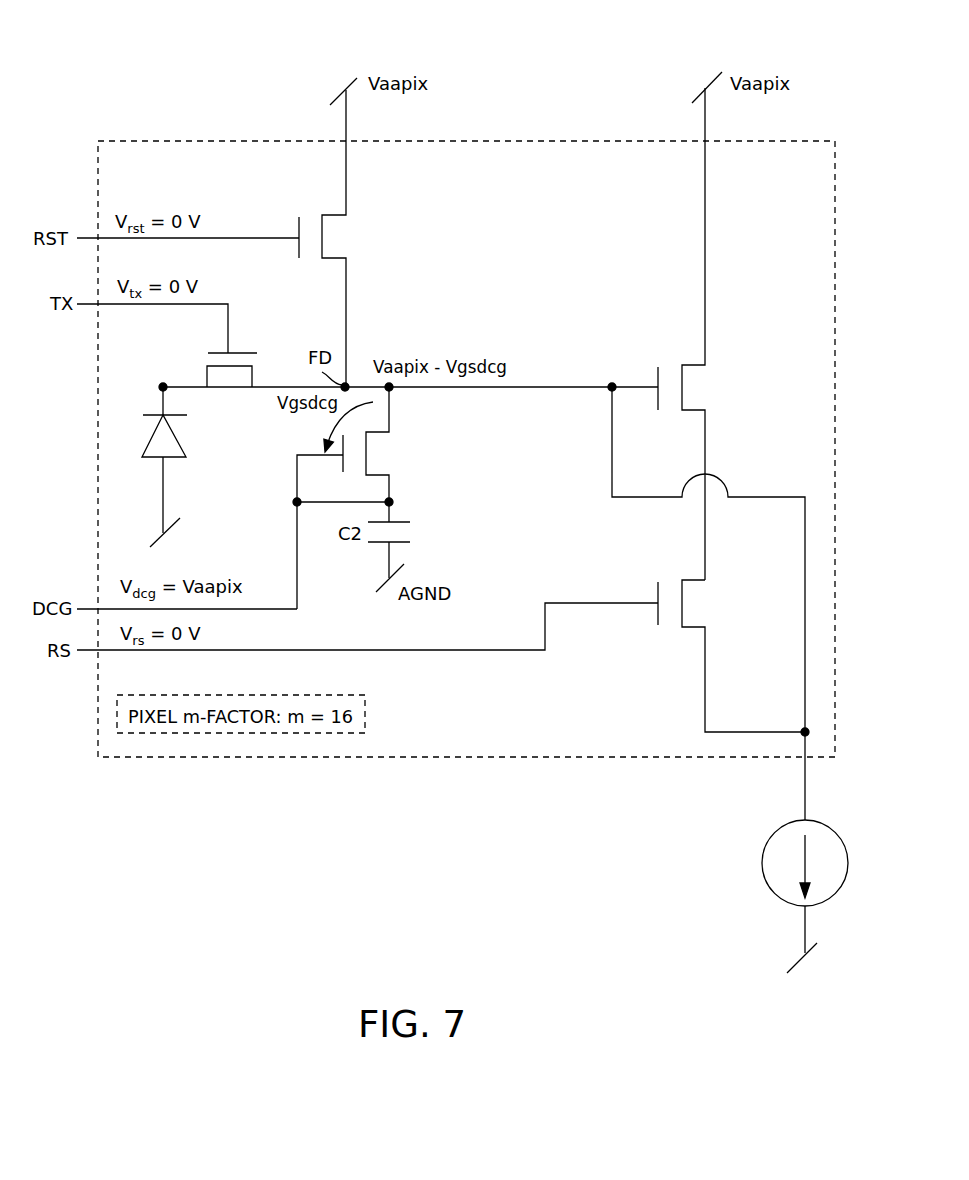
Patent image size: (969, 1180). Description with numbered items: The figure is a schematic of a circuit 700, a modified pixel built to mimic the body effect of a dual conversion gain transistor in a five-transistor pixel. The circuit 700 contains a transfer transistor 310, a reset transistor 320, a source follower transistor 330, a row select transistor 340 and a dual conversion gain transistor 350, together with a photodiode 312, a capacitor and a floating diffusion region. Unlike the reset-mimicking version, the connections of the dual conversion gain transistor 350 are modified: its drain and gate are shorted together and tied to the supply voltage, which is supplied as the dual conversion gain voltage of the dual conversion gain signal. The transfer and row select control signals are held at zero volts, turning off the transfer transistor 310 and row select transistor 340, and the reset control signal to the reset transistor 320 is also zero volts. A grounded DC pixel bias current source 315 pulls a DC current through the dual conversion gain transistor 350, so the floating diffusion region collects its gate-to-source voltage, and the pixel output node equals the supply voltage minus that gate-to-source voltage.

The circuit 700 is at (163, 112).
The reset transistor 320 is at (337, 257).
The transfer transistor 310 is at (252, 357).
The photodiode 312 is at (178, 437).
The dual conversion gain transistor 350 is at (382, 468).
The source follower transistor 330 is at (695, 409).
The row select transistor 340 is at (695, 625).
The DC pixel bias current source 315 is at (778, 903).